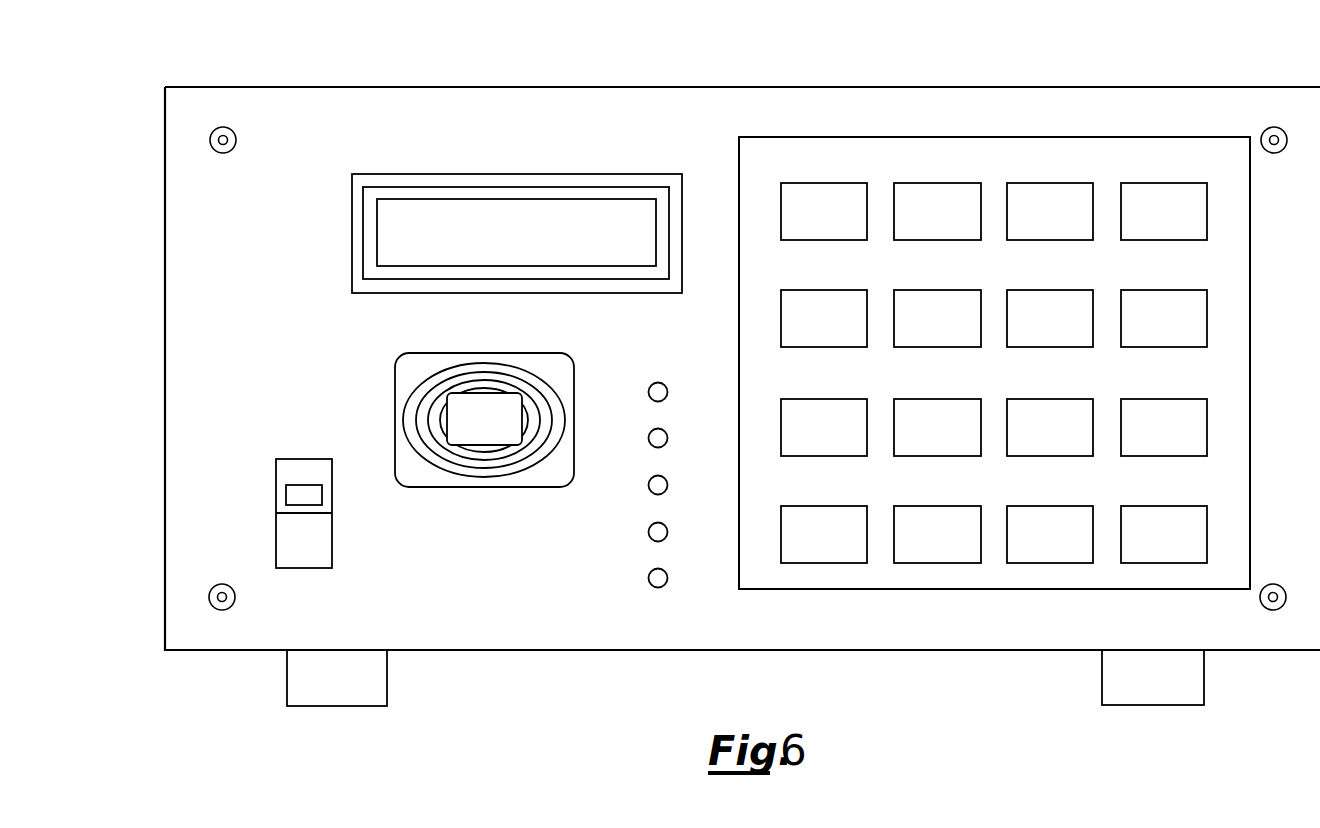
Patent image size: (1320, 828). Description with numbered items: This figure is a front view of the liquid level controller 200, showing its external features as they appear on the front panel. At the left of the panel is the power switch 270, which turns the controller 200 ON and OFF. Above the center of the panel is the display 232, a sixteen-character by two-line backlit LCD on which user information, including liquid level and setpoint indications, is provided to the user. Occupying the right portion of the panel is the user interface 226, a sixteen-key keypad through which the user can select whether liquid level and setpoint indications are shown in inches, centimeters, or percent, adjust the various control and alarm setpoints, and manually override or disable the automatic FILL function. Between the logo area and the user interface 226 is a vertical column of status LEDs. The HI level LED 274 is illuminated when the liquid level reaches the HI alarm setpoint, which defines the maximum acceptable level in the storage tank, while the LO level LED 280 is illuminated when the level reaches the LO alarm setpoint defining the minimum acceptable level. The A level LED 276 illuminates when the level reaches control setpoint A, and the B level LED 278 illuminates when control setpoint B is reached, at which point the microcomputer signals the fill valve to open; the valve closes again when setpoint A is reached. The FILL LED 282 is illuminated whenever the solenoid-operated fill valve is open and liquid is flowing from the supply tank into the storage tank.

The controller 200 is at (165, 162).
The user interface 226 is at (808, 137).
The display 232 is at (412, 208).
The power switch 270 is at (291, 457).
The HI level LED 274 is at (648, 392).
The A level LED 276 is at (648, 438).
The B level LED 278 is at (648, 485).
The LO level LED 280 is at (648, 532).
The FILL LED 282 is at (655, 588).